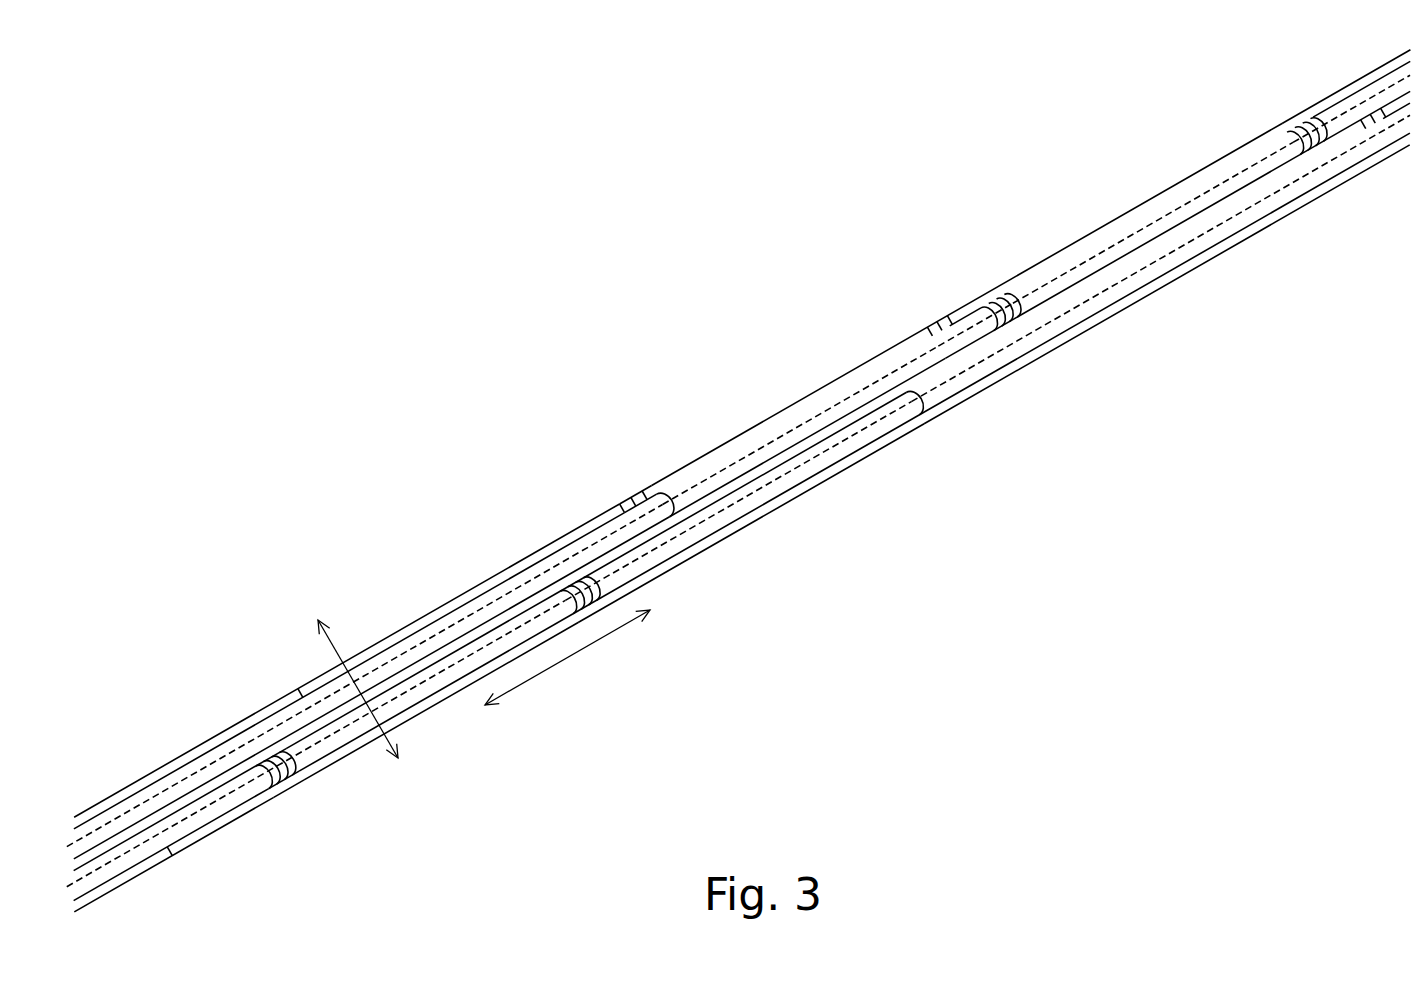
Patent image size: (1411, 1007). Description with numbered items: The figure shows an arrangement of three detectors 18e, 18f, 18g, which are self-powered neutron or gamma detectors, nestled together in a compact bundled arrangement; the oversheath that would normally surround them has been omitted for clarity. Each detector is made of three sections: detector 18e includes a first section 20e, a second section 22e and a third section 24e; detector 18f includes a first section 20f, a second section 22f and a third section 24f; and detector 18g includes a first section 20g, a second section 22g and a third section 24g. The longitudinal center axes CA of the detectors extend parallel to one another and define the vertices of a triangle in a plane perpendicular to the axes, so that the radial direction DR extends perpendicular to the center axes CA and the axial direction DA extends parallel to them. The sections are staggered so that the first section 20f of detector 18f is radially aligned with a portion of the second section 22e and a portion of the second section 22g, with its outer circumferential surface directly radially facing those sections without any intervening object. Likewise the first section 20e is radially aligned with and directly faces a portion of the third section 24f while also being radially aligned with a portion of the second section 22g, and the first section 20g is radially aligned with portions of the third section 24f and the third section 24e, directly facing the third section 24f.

The detector 18e is at (601, 512).
The detector 18f is at (961, 306).
The detector 18g is at (212, 822).
The first section 20e is at (827, 375).
The first section 20f is at (1215, 187).
The first section 20g is at (428, 683).
The second section 22e is at (1305, 108).
The second section 22f is at (1343, 112).
The second section 22g is at (825, 452).
The third section 24e is at (455, 598).
The third section 24f is at (725, 463).
The third section 24g is at (242, 788).
The center axis CA is at (268, 703).
The radial direction DR is at (349, 648).
The axial direction DA is at (567, 660).